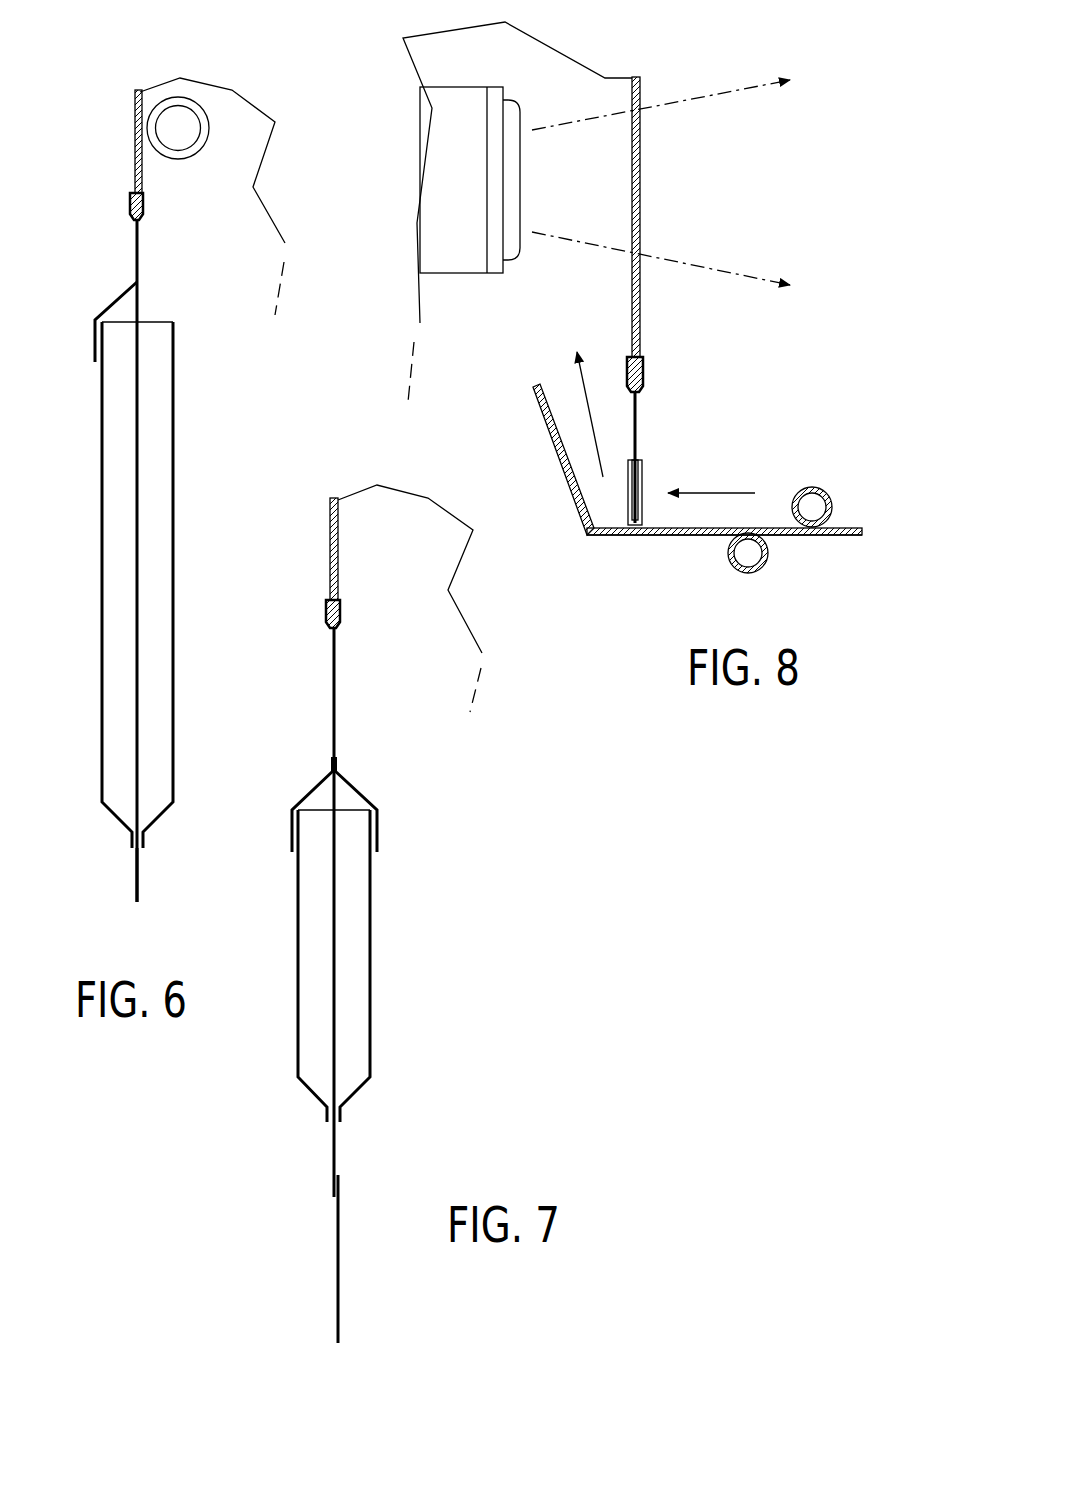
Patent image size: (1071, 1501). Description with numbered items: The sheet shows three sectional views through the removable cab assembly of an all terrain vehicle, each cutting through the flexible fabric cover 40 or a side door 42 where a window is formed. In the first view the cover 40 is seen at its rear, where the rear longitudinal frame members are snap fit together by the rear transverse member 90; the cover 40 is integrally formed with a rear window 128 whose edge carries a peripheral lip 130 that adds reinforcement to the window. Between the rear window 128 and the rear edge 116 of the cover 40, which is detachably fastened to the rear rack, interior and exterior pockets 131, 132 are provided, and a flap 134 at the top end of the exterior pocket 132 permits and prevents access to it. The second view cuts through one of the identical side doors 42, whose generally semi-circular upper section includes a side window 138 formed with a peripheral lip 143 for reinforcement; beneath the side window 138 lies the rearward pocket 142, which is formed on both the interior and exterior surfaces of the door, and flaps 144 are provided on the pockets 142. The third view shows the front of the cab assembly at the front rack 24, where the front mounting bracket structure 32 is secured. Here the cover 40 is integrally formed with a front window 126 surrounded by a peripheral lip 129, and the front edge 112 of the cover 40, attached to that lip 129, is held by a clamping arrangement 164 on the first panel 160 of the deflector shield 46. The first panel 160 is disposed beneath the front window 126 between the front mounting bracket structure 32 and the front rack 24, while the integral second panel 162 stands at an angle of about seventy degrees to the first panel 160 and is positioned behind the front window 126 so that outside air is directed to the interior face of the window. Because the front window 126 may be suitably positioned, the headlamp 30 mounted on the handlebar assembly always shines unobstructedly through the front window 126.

In FIG. 8, the front rack 24 is at (773, 578).
In FIG. 8, the headlamp 30 is at (512, 172).
In FIG. 8, the front mounting bracket structure 32 is at (813, 484).
In FIG. 6, the flexible fabric cover 40 is at (146, 255).
In FIG. 8, the flexible fabric cover 40 is at (633, 440).
In FIG. 7, the side door 42 is at (358, 758).
In FIG. 8, the deflector shield 46 is at (650, 552).
In FIG. 6, the rear transverse member 90 is at (193, 160).
In FIG. 8, the front edge 112 is at (641, 462).
In FIG. 6, the rear edge 116 is at (139, 878).
In FIG. 8, the front window 126 is at (641, 183).
In FIG. 6, the rear window 128 is at (135, 155).
In FIG. 8, the peripheral lip 129 is at (644, 370).
In FIG. 6, the peripheral lip 130 is at (132, 207).
In FIG. 6, the interior pocket 131 is at (173, 565).
In FIG. 6, the exterior pocket 132 is at (102, 560).
In FIG. 6, the flap 134 is at (95, 343).
In FIG. 7, the side window 138 is at (338, 560).
In FIG. 7, the rearward pocket 142 is at (298, 940).
In FIG. 7, the peripheral lip 143 is at (340, 615).
In FIG. 7, the flap 144 is at (292, 830).
In FIG. 8, the first panel 160 is at (727, 527).
In FIG. 8, the second panel 162 is at (560, 465).
In FIG. 8, the clamping arrangement 164 is at (643, 492).